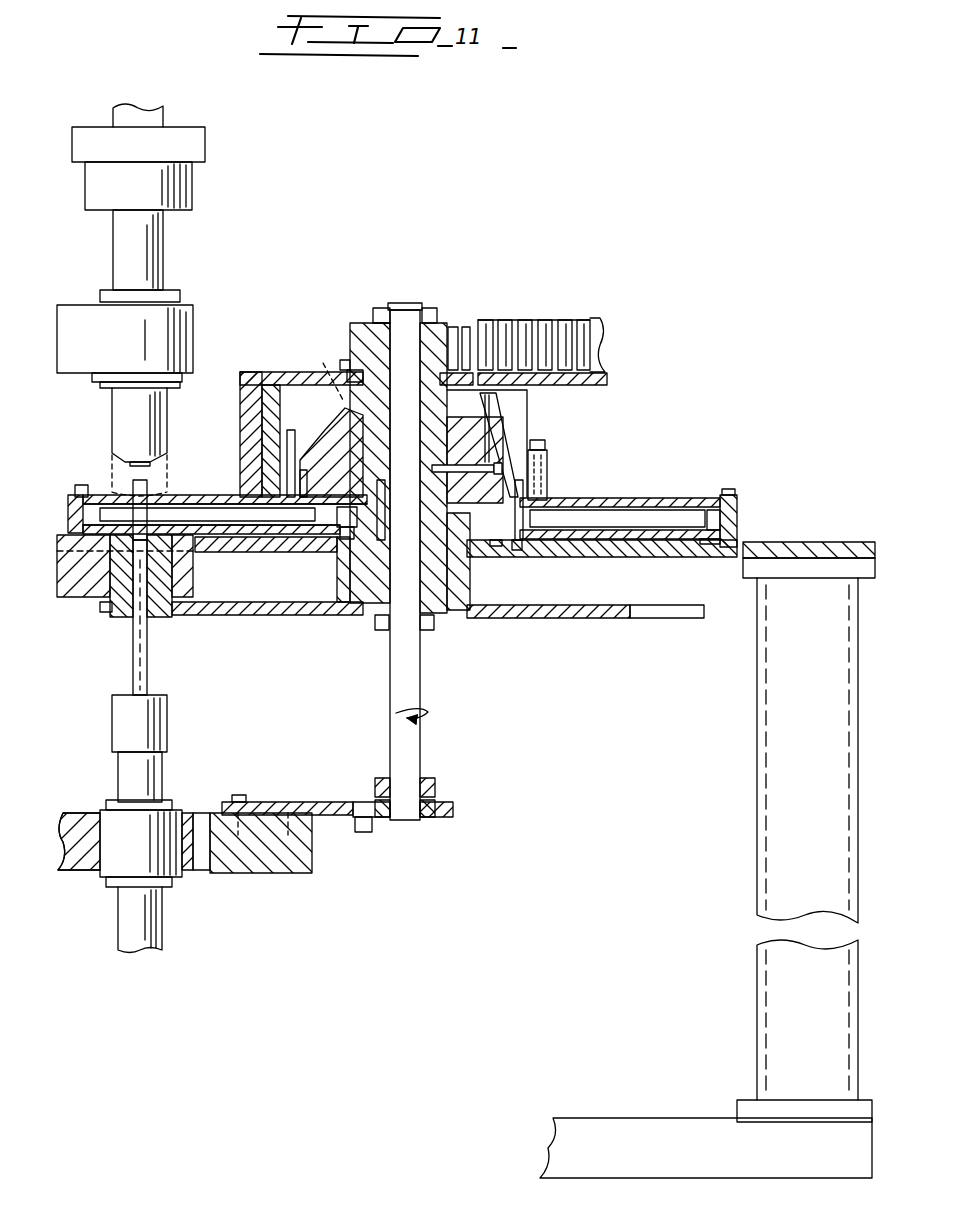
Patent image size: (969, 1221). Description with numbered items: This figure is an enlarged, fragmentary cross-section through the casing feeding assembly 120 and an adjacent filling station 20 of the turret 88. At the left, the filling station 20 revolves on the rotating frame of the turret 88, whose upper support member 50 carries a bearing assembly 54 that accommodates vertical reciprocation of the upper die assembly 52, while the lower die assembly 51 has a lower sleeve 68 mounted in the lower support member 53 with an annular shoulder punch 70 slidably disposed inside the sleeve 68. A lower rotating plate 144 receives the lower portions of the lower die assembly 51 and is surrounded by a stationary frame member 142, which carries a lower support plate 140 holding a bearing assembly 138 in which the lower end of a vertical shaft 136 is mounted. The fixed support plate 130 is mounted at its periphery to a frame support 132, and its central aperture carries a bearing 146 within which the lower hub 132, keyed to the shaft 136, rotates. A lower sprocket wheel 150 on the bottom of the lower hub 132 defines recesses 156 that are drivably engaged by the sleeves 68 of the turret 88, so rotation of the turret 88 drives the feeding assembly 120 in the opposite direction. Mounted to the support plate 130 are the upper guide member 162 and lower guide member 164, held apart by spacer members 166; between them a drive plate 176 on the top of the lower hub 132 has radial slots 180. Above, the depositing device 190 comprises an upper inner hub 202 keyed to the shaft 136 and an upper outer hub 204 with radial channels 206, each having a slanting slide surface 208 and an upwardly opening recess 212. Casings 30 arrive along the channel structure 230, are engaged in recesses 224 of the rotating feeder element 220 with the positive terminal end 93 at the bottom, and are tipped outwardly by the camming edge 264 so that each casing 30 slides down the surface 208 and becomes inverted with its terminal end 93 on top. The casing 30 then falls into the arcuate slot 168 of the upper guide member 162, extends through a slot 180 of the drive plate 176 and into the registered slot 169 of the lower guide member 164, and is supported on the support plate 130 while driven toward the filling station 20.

The turret 88 is at (131, 273).
The upper support member 50 is at (190, 330).
The bearing assembly 54 is at (175, 380).
The upper die assembly 52 is at (170, 415).
The lower die assembly 51 is at (166, 488).
The filling station 20 is at (80, 434).
The casing 30 is at (133, 490).
The positive terminal end 93 is at (250, 470).
The slot 180 is at (242, 512).
The lower support member 53 is at (77, 584).
The recess 156 is at (663, 613).
The lower sleeve 68 is at (150, 618).
The annular shoulder punch 70 is at (144, 678).
The lower rotating plate 144 is at (72, 862).
The stationary frame member 142 is at (292, 863).
The lower support plate 140 is at (352, 803).
The bearing assembly 138 is at (432, 803).
The shaft 136 is at (411, 668).
The lower hub 132 is at (458, 607).
The lower sprocket wheel 150 is at (548, 613).
The stationary support plate 130 is at (641, 551).
The lower guide member 164 is at (707, 557).
The spacer member 166 is at (736, 522).
The drive plate 176 is at (703, 502).
The upper guide member 162 is at (675, 502).
The slot 168 is at (519, 500).
The slot 169 is at (516, 555).
The radial channel 206 is at (312, 380).
The upper outer hub 204 is at (532, 437).
The slanting slide surface 208 is at (300, 410).
The recess 212 is at (465, 391).
The upper inner hub 202 is at (445, 425).
The rotating feeder element 220 is at (444, 320).
The recess 224 is at (372, 320).
The depositing device 190 is at (364, 320).
The camming edge 264 is at (358, 362).
The channel structure 230 is at (606, 318).
The feeding assembly 120 is at (540, 266).
The bearing 146 is at (345, 572).